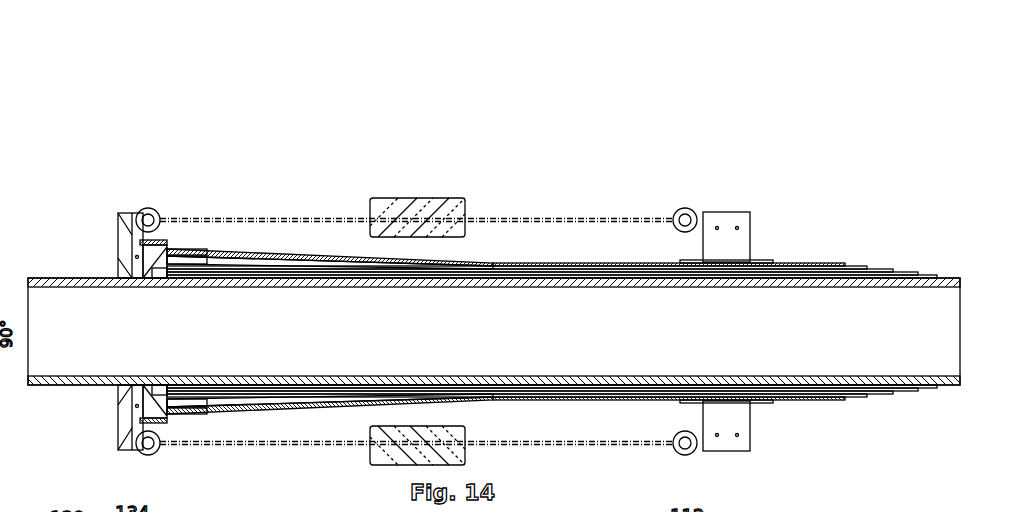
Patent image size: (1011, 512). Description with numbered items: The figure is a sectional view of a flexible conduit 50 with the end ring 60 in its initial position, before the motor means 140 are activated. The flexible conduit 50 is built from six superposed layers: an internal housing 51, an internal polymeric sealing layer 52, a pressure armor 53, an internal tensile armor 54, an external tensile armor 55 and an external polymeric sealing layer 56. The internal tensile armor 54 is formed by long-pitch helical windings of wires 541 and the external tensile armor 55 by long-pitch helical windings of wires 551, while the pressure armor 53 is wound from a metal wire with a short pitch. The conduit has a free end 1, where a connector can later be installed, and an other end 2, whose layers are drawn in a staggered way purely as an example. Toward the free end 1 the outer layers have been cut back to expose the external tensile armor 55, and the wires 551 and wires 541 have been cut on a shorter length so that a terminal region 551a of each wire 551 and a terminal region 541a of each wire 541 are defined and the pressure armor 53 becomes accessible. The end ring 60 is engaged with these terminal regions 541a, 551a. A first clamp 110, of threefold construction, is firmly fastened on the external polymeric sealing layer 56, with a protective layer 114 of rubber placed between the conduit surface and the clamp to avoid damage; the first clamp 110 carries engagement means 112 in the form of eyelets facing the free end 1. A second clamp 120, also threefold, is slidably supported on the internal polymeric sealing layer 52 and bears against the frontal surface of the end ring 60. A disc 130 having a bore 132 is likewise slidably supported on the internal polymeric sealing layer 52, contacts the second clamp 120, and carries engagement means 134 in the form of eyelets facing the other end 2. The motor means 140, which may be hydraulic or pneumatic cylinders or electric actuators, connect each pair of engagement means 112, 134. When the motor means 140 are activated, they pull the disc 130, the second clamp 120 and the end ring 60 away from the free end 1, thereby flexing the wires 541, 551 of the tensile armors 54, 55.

The free end 1 is at (33, 268).
The other end 2 is at (948, 183).
The flexible conduit 50 is at (539, 240).
The internal housing 51 is at (942, 277).
The internal polymeric sealing layer 52 is at (920, 275).
The pressure armor 53 is at (898, 272).
The internal tensile armor 54 is at (877, 269).
The external tensile armor 55 is at (855, 267).
The external polymeric sealing layer 56 is at (832, 263).
The end ring 60 is at (140, 240).
The first clamp 110 is at (725, 212).
The engagement means 112 is at (687, 208).
The protective layer 114 is at (760, 261).
The second clamp 120 is at (137, 393).
The disc 130 is at (118, 214).
The bore 132 is at (127, 276).
The engagement means 134 is at (147, 206).
The motor means 140 is at (422, 198).
The wires 541 is at (303, 258).
The terminal region 541a is at (177, 249).
The wires 551 is at (327, 262).
The terminal region 551a is at (195, 250).